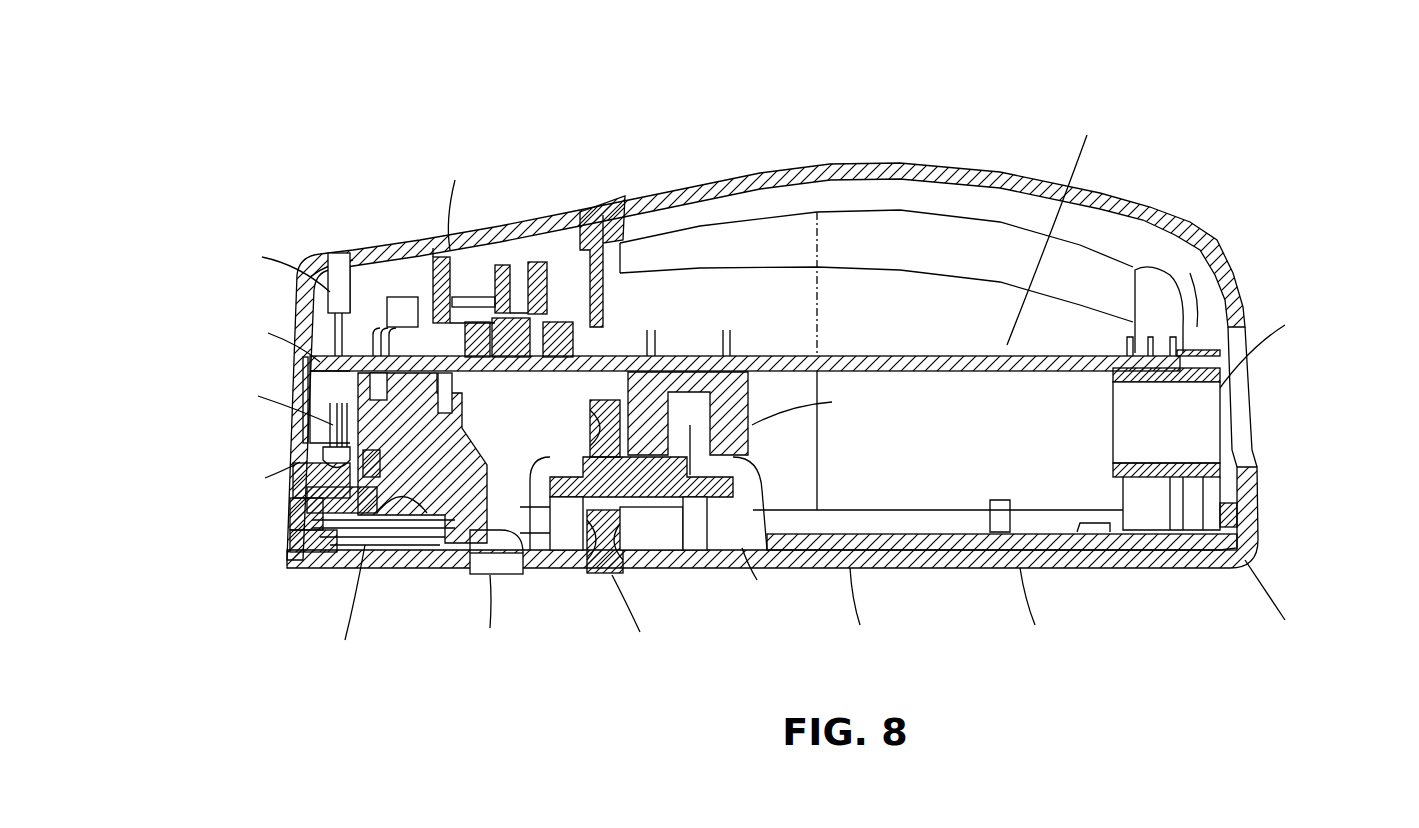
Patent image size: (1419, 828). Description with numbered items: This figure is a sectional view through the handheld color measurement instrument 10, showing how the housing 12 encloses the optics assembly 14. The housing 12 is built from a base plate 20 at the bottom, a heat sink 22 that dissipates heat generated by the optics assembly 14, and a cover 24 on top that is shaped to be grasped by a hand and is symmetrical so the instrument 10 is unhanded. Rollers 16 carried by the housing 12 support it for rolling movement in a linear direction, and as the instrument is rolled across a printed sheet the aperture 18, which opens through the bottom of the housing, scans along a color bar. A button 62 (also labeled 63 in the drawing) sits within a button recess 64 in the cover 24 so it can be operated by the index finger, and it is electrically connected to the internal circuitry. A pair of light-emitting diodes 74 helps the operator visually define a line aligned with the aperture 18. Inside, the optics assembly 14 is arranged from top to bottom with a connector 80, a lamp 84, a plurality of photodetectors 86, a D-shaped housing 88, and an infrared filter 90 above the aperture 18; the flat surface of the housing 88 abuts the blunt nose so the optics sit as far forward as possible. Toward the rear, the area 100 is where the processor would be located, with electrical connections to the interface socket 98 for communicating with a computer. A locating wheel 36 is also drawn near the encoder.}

The handheld color measurement instrument 10 is at (680, 118).
The housing 12 is at (962, 158).
The optics assembly 14 is at (470, 437).
The rollers 16 is at (515, 575).
The aperture 18 is at (335, 555).
The base plate 20 is at (1245, 535).
The heat sink 22 is at (1140, 568).
The cover 24 is at (1145, 220).
The locating wheel 36 is at (597, 575).
The button 62 is at (300, 372).
The button 63 is at (507, 262).
The button recess 64 is at (620, 200).
The light-emitting diodes 74 is at (335, 258).
The connector 80 is at (397, 305).
The lamp 84 is at (320, 455).
The photodetectors 86 is at (397, 540).
The housing 88 is at (300, 470).
The infrared filter 90 is at (445, 537).
The interface socket 98 is at (1210, 440).
The area 100 is at (1022, 452).